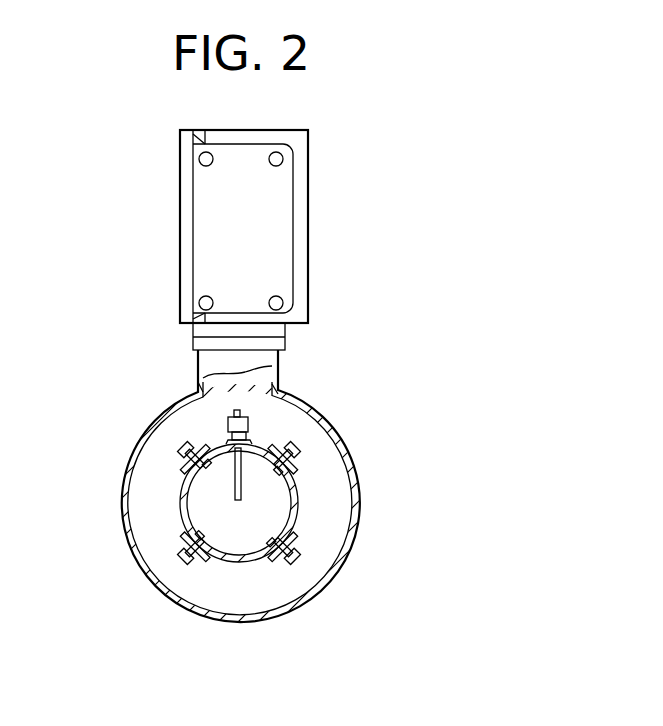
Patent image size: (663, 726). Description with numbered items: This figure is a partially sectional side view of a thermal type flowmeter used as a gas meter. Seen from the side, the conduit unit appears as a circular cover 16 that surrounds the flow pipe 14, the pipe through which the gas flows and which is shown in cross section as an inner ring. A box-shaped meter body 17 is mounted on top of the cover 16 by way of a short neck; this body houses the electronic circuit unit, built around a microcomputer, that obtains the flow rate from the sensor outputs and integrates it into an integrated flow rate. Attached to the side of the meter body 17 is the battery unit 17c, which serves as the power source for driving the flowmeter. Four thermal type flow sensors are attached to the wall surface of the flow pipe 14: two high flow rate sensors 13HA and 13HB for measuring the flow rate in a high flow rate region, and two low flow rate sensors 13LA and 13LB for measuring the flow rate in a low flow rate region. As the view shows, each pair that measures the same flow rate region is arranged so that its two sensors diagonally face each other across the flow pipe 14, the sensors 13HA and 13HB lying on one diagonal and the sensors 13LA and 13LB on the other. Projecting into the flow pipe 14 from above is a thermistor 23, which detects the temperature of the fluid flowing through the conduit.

The box-shaped meter body 17 is at (312, 210).
The battery unit 17c is at (215, 235).
The cover 16 is at (302, 408).
The flow pipe 14 is at (300, 506).
The thermistor 23 is at (242, 487).
The high flow rate sensor 13HA is at (186, 441).
The low flow rate sensor 13LA is at (300, 447).
The low flow rate sensor 13LB is at (178, 566).
The high flow rate sensor 13HB is at (296, 565).